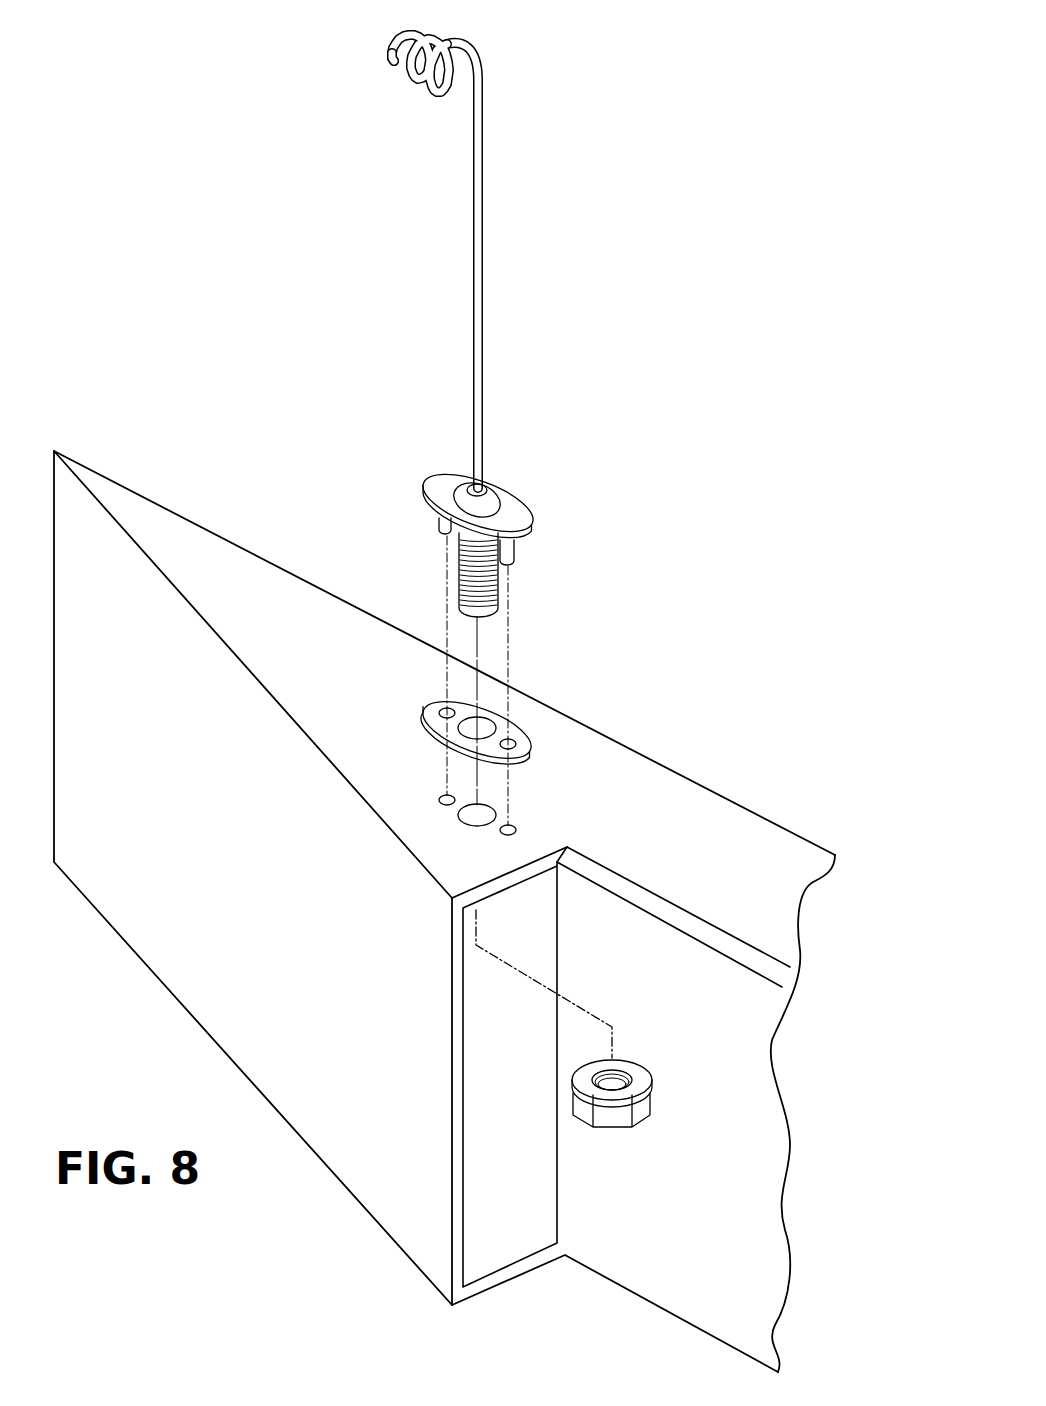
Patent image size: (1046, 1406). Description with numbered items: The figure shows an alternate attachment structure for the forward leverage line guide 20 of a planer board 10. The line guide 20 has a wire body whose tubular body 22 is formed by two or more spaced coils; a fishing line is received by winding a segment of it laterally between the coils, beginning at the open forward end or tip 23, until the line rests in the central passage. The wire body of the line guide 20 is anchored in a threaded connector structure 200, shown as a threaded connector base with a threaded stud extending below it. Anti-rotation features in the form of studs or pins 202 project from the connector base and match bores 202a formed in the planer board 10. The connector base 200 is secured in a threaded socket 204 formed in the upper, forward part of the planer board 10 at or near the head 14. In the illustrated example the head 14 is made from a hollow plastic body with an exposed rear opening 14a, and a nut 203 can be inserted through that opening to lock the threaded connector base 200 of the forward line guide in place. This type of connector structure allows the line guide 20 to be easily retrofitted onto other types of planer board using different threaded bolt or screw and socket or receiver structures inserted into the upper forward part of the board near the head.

The planer board 10 is at (815, 722).
The head 14 is at (208, 550).
The rear opening 14a is at (508, 1245).
The line guide 20 is at (498, 246).
The tubular body 22 is at (402, 24).
The tip 23 is at (398, 70).
The threaded connector structure 200 is at (515, 510).
The pins 202 is at (517, 548).
The bores 202a is at (512, 828).
The nut 203 is at (620, 1128).
The threaded socket 204 is at (458, 815).